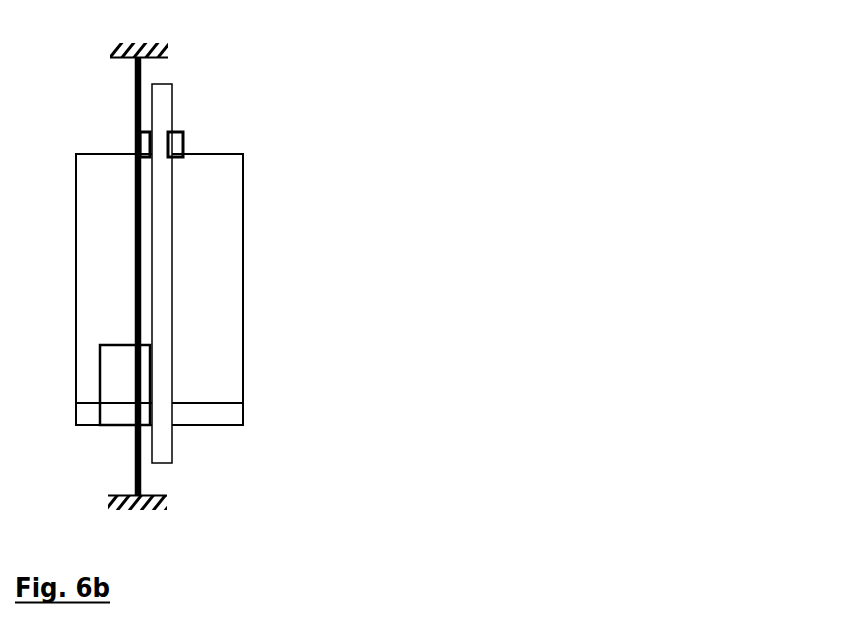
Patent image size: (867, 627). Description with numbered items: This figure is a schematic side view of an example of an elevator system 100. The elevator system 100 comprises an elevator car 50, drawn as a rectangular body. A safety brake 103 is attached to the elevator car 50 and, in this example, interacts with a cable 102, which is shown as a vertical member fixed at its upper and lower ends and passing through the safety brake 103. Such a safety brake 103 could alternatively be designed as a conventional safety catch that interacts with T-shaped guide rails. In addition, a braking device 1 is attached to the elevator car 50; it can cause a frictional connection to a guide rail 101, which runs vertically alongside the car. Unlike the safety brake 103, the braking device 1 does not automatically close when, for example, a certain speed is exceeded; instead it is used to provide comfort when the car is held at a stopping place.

The braking device 1 is at (180, 140).
The elevator car 50 is at (212, 277).
The elevator system 100 is at (349, 267).
The guide rail 101 is at (167, 372).
The cable 102 is at (133, 97).
The safety brake 103 is at (117, 392).